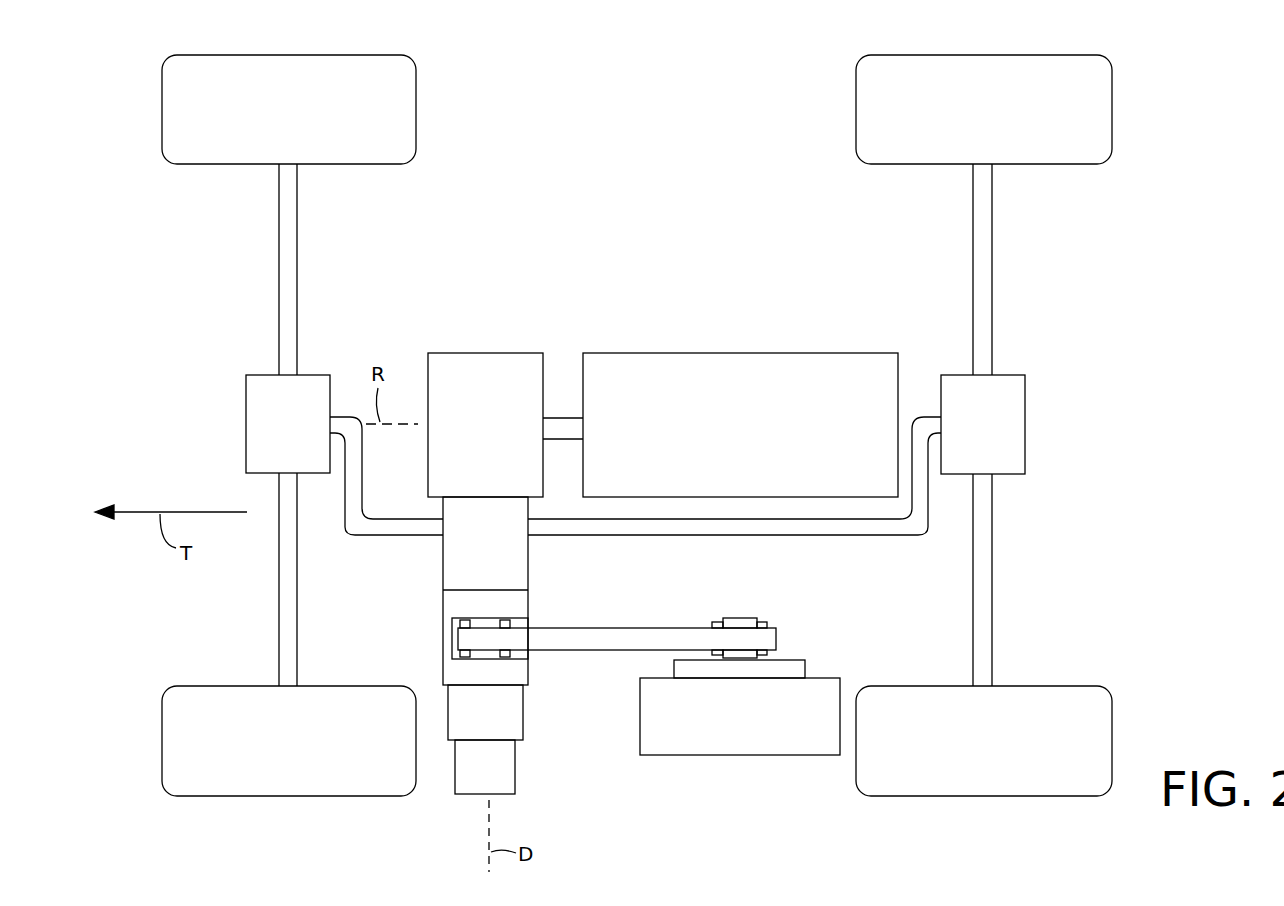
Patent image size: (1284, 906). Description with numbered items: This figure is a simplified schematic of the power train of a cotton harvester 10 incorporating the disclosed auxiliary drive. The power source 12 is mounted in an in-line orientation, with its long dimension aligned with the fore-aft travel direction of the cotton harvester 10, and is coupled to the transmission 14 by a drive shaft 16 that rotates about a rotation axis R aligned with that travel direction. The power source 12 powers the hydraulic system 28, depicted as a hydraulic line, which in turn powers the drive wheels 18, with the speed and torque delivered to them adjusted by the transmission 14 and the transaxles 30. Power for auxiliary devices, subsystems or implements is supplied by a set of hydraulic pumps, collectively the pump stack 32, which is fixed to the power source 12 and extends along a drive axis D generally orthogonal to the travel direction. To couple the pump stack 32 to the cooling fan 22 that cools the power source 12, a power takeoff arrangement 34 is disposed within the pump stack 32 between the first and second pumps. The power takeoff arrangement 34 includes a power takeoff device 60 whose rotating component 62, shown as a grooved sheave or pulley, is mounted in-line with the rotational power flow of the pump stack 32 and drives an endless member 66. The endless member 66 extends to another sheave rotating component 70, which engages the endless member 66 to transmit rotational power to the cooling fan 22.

The cotton harvester 10 is at (592, 136).
The power source 12 is at (748, 428).
The transmission 14 is at (497, 428).
The drive shaft 16 is at (563, 417).
The powered wheels 18 is at (349, 158).
The cooling fan 22 is at (757, 748).
The hydraulic system 28 is at (822, 532).
The transaxles 30 is at (253, 426).
The pump stack 32 is at (533, 572).
The power takeoff arrangement 34 is at (547, 613).
The power takeoff device 60 is at (452, 639).
The rotating component 62 is at (464, 624).
The endless member 66 is at (668, 632).
The sheave rotating component 70 is at (760, 620).